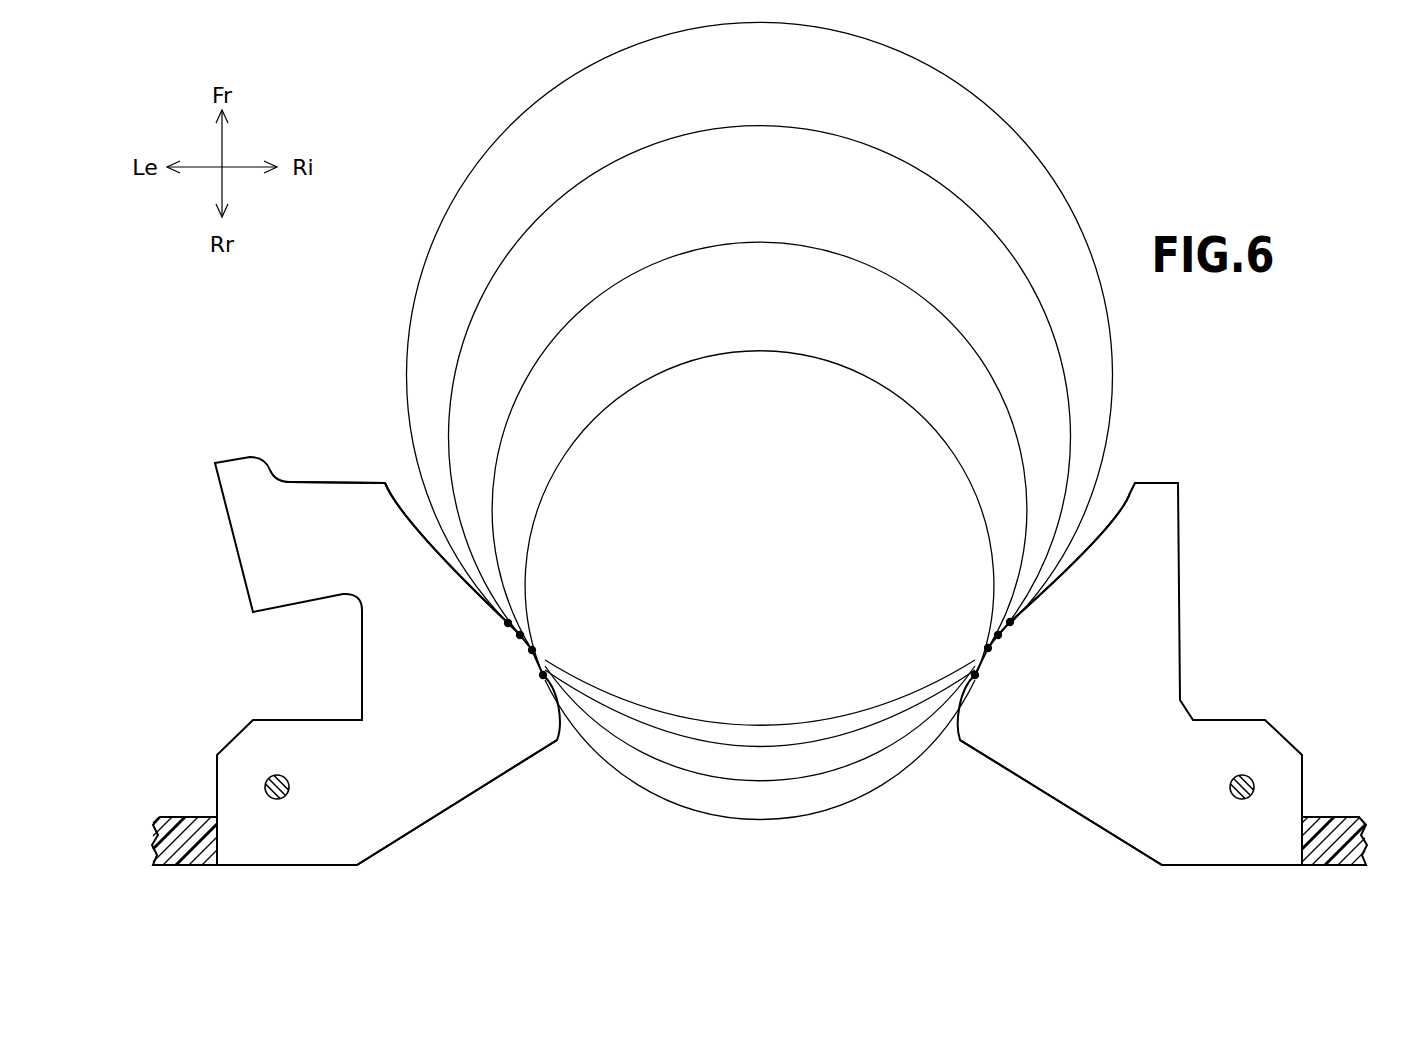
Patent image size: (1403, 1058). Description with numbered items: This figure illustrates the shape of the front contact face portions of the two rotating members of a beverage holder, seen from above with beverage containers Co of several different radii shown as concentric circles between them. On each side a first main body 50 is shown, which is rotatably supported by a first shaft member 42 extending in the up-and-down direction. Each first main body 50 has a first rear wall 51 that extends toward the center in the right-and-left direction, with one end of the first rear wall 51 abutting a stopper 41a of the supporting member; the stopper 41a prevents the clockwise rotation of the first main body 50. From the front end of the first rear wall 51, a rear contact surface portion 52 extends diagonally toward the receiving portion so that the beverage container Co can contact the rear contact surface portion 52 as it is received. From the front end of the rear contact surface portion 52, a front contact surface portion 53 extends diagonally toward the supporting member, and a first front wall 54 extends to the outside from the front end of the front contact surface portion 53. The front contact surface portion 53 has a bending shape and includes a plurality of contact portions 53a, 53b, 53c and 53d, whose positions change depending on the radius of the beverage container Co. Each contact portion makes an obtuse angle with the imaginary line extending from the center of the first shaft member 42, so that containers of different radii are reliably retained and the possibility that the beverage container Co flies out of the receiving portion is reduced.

The first main body 50 is at (223, 460).
The first front wall 54 is at (315, 480).
The front contact surface portion 53 is at (435, 548).
The contact portion 53a is at (535, 648).
The contact portion 53b is at (523, 632).
The contact portion 53c is at (511, 619).
The contact portion 53d is at (546, 674).
The rear contact surface portion 52 is at (462, 807).
The first rear wall 51 is at (295, 867).
The first shaft member 42 is at (280, 776).
The stopper 41a is at (218, 840).
The beverage container Co is at (761, 820).